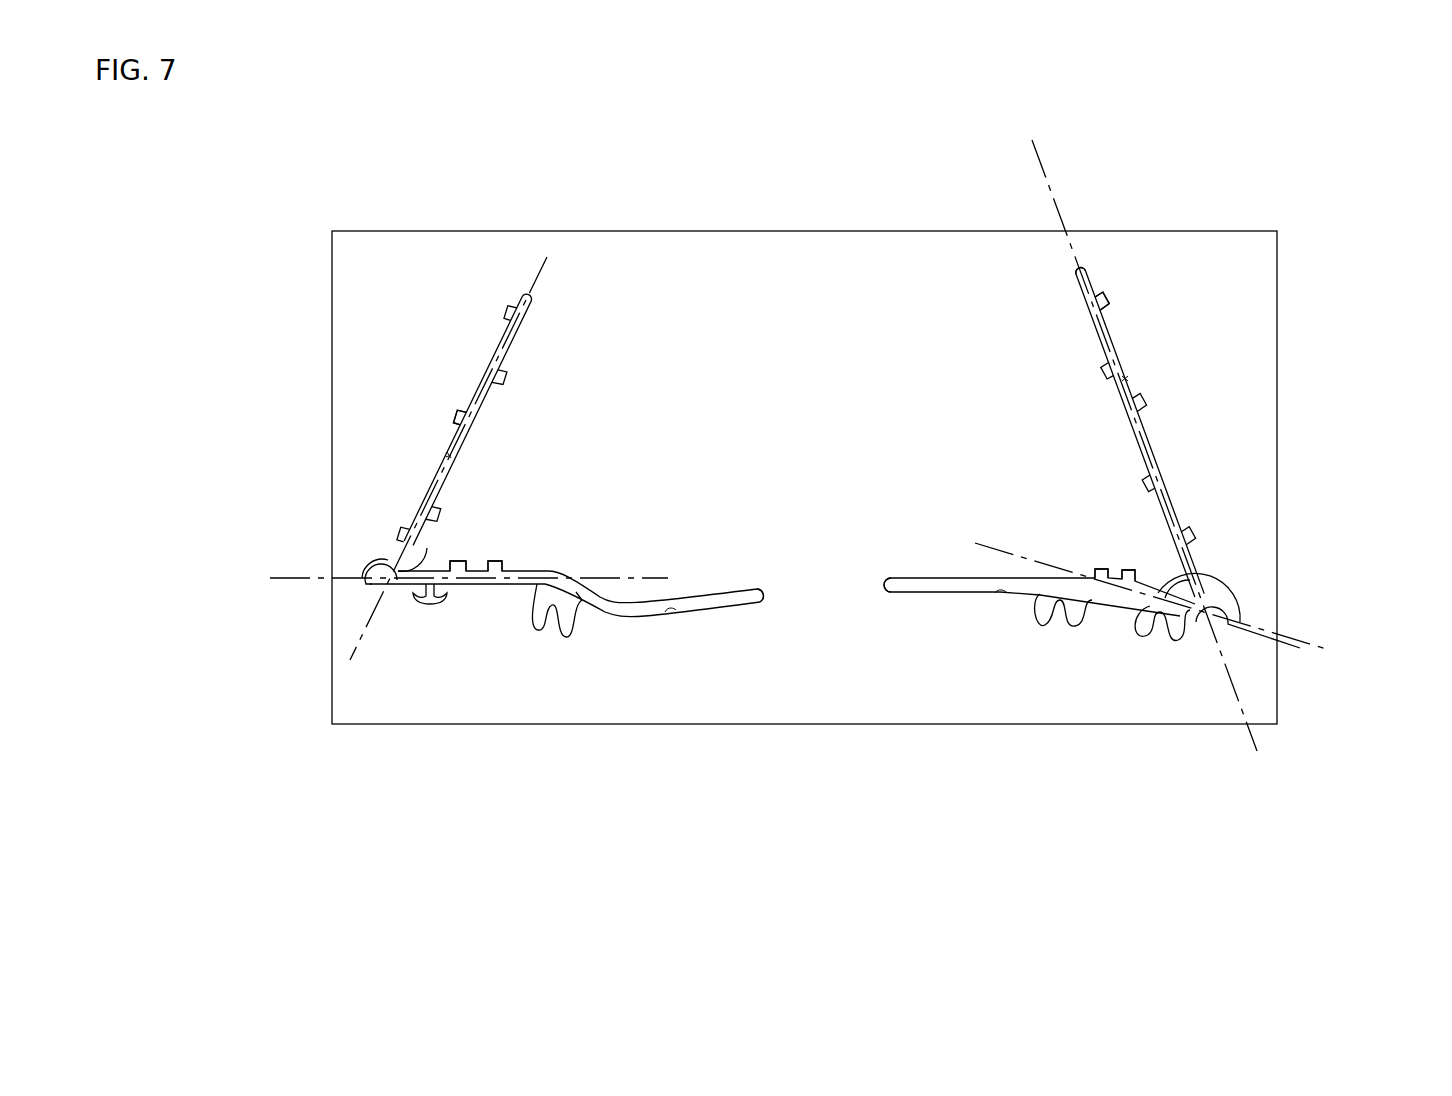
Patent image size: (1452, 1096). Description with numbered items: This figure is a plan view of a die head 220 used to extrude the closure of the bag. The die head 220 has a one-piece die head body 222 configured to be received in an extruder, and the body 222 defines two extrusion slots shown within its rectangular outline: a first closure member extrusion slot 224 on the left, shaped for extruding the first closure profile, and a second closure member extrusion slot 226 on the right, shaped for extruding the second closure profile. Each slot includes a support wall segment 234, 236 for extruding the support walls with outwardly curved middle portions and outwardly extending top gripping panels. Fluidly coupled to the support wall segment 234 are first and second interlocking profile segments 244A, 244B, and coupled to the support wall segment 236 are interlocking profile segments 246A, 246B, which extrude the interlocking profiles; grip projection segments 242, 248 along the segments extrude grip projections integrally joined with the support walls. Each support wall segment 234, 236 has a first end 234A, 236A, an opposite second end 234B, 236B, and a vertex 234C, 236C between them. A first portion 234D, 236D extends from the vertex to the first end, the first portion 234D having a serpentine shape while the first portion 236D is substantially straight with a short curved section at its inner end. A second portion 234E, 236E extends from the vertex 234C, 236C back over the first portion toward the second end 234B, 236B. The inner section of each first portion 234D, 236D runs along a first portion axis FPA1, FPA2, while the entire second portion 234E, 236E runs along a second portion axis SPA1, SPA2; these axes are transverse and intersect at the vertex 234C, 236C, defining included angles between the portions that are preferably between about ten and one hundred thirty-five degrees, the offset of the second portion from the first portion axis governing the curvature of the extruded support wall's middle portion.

The die head 220 is at (366, 795).
The die head body 222 is at (845, 703).
The first closure member extrusion slot 224 is at (610, 405).
The second closure member extrusion slot 226 is at (1048, 430).
The support wall segment 234 is at (570, 548).
The first end 234A is at (762, 600).
The second end 234B is at (533, 293).
The vertex 234C is at (400, 588).
The first portion 234D is at (672, 614).
The second portion 234E is at (446, 456).
The support wall segment 236 is at (1185, 480).
The first end 236A is at (893, 578).
The second end 236B is at (1083, 265).
The vertex 236C is at (1275, 640).
The first portion 236D is at (1000, 593).
The second portion 236E is at (1128, 379).
The grip projection segment 242 is at (455, 412).
The first interlocking profile segment 244A is at (432, 602).
The second interlocking profile segment 244B is at (553, 640).
The first interlocking profile segment 246A is at (1162, 625).
The second interlocking profile segment 246B is at (1045, 620).
The grip projection segment 248 is at (492, 562).
The second portion axis SPA1 is at (540, 265).
The second portion axis SPA2 is at (1052, 190).
The first portion axis FPA1 is at (650, 578).
The first portion axis FPA2 is at (1310, 650).